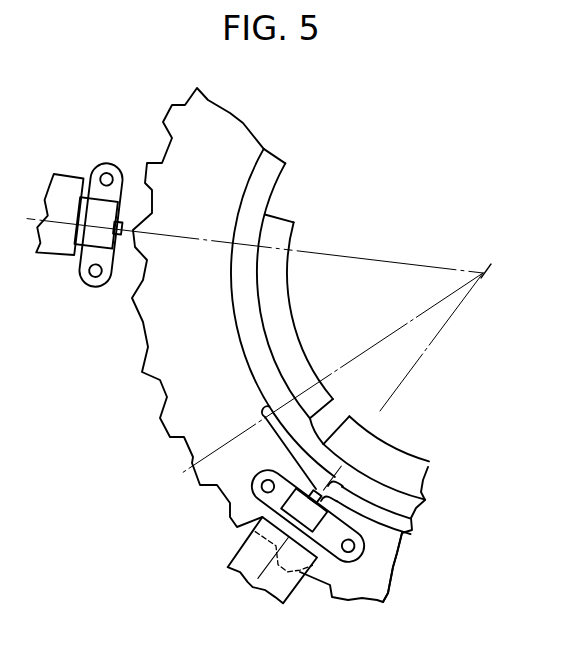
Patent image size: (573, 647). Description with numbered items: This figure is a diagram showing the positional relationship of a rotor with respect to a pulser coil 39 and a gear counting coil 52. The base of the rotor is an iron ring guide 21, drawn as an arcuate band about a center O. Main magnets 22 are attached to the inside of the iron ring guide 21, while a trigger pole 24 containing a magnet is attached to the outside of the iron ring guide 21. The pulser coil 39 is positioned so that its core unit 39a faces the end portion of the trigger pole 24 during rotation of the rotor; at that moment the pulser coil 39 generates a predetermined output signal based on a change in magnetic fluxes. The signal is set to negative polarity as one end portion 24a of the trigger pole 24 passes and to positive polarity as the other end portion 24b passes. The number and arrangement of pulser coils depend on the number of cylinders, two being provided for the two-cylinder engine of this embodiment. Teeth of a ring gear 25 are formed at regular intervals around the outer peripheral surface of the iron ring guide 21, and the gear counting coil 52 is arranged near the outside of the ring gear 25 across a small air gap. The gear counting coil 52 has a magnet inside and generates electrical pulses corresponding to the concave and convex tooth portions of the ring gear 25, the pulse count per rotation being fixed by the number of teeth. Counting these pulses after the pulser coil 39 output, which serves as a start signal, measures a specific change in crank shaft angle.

The iron ring guide 21 is at (277, 190).
The main magnets 22 is at (292, 312).
The trigger pole 24 is at (335, 404).
The one end portion of the trigger pole 24a is at (267, 400).
The other end portion of the trigger pole 24b is at (343, 482).
The ring gear 25 is at (142, 372).
The pulser coil 39 is at (290, 512).
The core unit 39a is at (402, 531).
The gear counting coil 52 is at (95, 237).
The center of curvature O is at (486, 259).